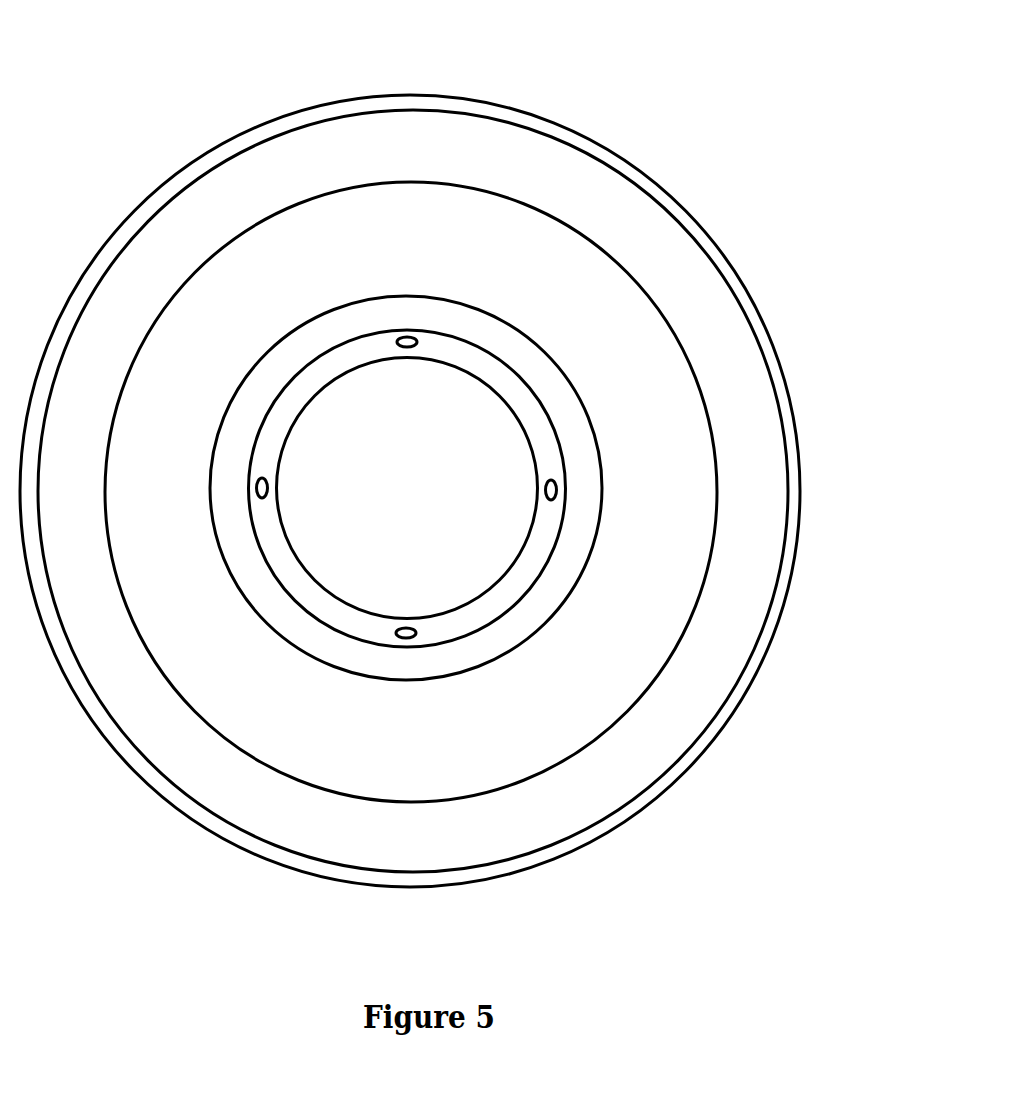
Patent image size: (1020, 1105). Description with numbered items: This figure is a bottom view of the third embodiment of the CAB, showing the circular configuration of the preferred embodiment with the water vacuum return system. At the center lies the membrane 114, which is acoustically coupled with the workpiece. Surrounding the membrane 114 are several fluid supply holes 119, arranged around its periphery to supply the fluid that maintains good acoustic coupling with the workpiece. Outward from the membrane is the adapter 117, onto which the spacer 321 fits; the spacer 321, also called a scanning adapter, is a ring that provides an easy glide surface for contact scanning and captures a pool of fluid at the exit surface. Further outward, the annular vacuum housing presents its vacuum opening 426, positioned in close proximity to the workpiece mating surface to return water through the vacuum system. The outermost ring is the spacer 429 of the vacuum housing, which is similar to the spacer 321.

The membrane 114 is at (467, 522).
The adapter 117 is at (528, 407).
The fluid supply holes 119 is at (407, 337).
The spacer 321 is at (582, 460).
The vacuum opening 426 is at (723, 355).
The spacer 429 is at (780, 392).